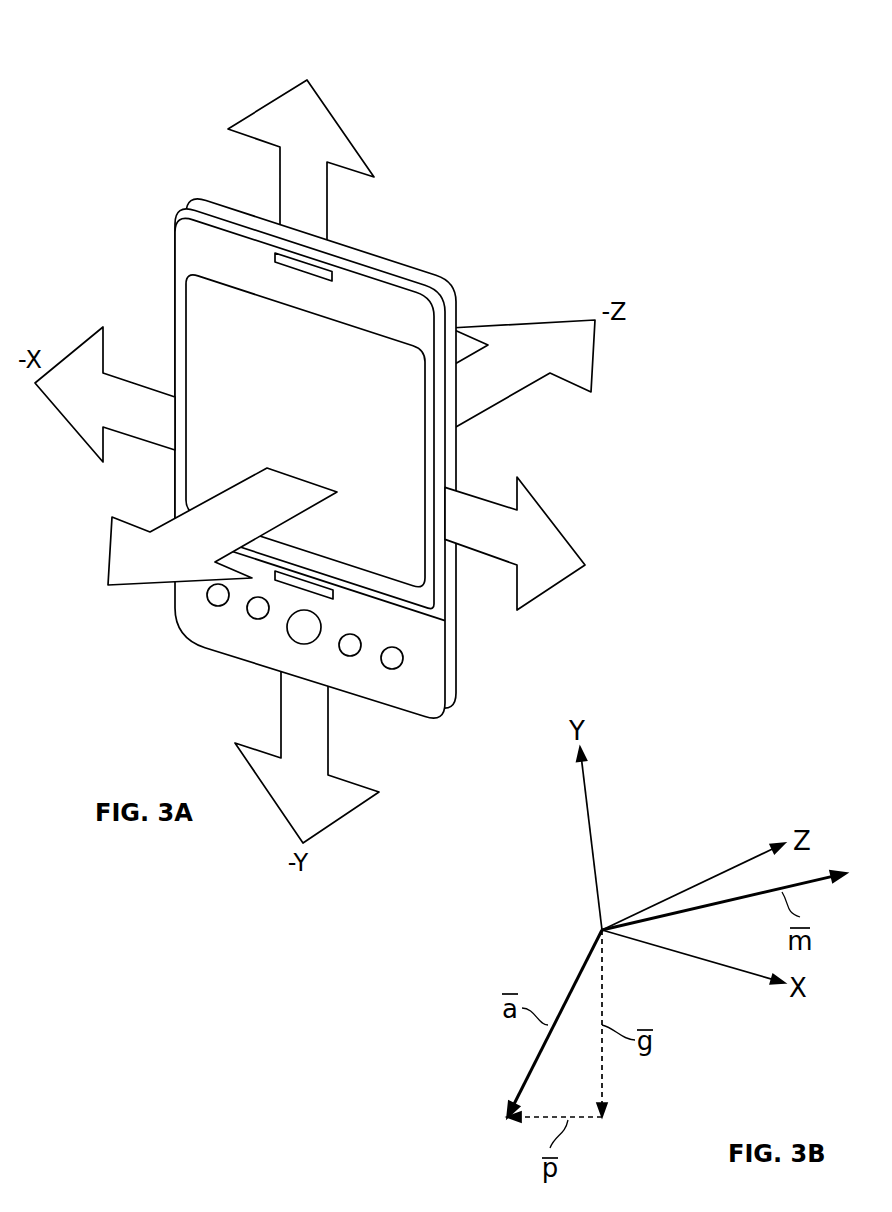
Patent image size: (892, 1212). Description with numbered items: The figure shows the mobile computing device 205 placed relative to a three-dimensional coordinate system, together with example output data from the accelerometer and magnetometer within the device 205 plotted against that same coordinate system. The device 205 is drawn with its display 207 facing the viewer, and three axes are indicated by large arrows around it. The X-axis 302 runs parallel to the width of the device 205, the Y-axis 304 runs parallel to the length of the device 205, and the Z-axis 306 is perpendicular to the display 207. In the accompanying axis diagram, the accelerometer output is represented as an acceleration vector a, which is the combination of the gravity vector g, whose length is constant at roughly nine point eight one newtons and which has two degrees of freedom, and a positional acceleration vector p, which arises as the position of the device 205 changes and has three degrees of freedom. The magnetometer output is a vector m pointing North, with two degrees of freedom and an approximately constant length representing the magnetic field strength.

The mobile computing device 205 is at (400, 267).
The display 207 is at (210, 340).
The X-axis 302 is at (550, 590).
The Y-axis 304 is at (348, 135).
The Z-axis 306 is at (143, 587).